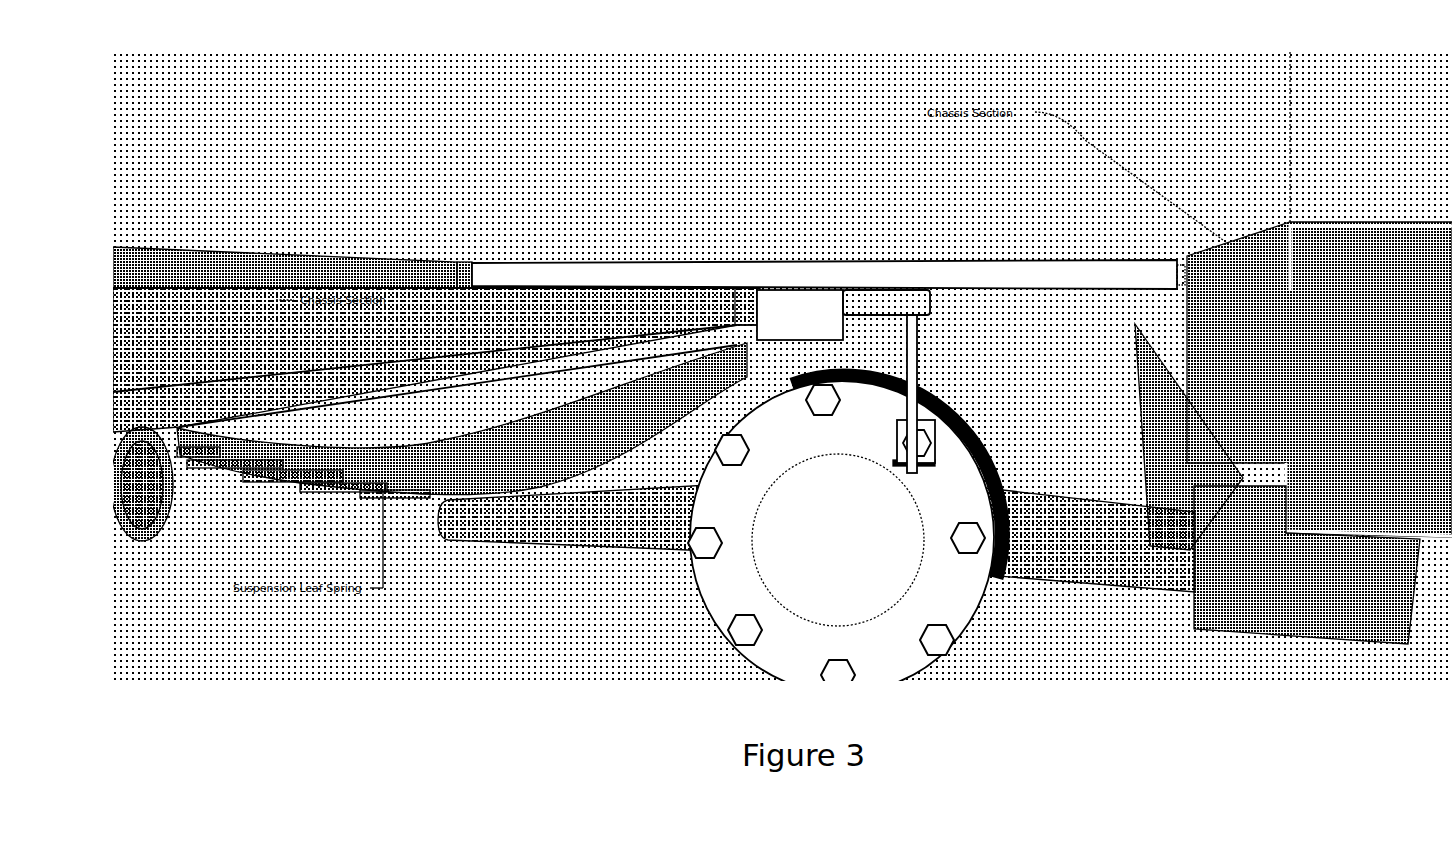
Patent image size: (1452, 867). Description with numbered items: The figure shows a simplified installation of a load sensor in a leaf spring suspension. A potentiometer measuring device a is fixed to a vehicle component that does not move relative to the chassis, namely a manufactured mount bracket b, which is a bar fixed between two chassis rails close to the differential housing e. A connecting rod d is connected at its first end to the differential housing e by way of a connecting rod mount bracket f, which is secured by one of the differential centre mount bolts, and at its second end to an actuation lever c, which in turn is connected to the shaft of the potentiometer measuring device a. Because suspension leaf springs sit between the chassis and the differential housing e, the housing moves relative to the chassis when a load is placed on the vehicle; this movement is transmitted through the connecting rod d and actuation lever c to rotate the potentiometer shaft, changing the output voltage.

The potentiometer measuring device a is at (844, 258).
The manufactured mount bracket b is at (702, 259).
The actuation lever c is at (935, 317).
The connecting rod d is at (918, 350).
The differential housing e is at (987, 440).
The connecting rod mount bracket f is at (895, 462).